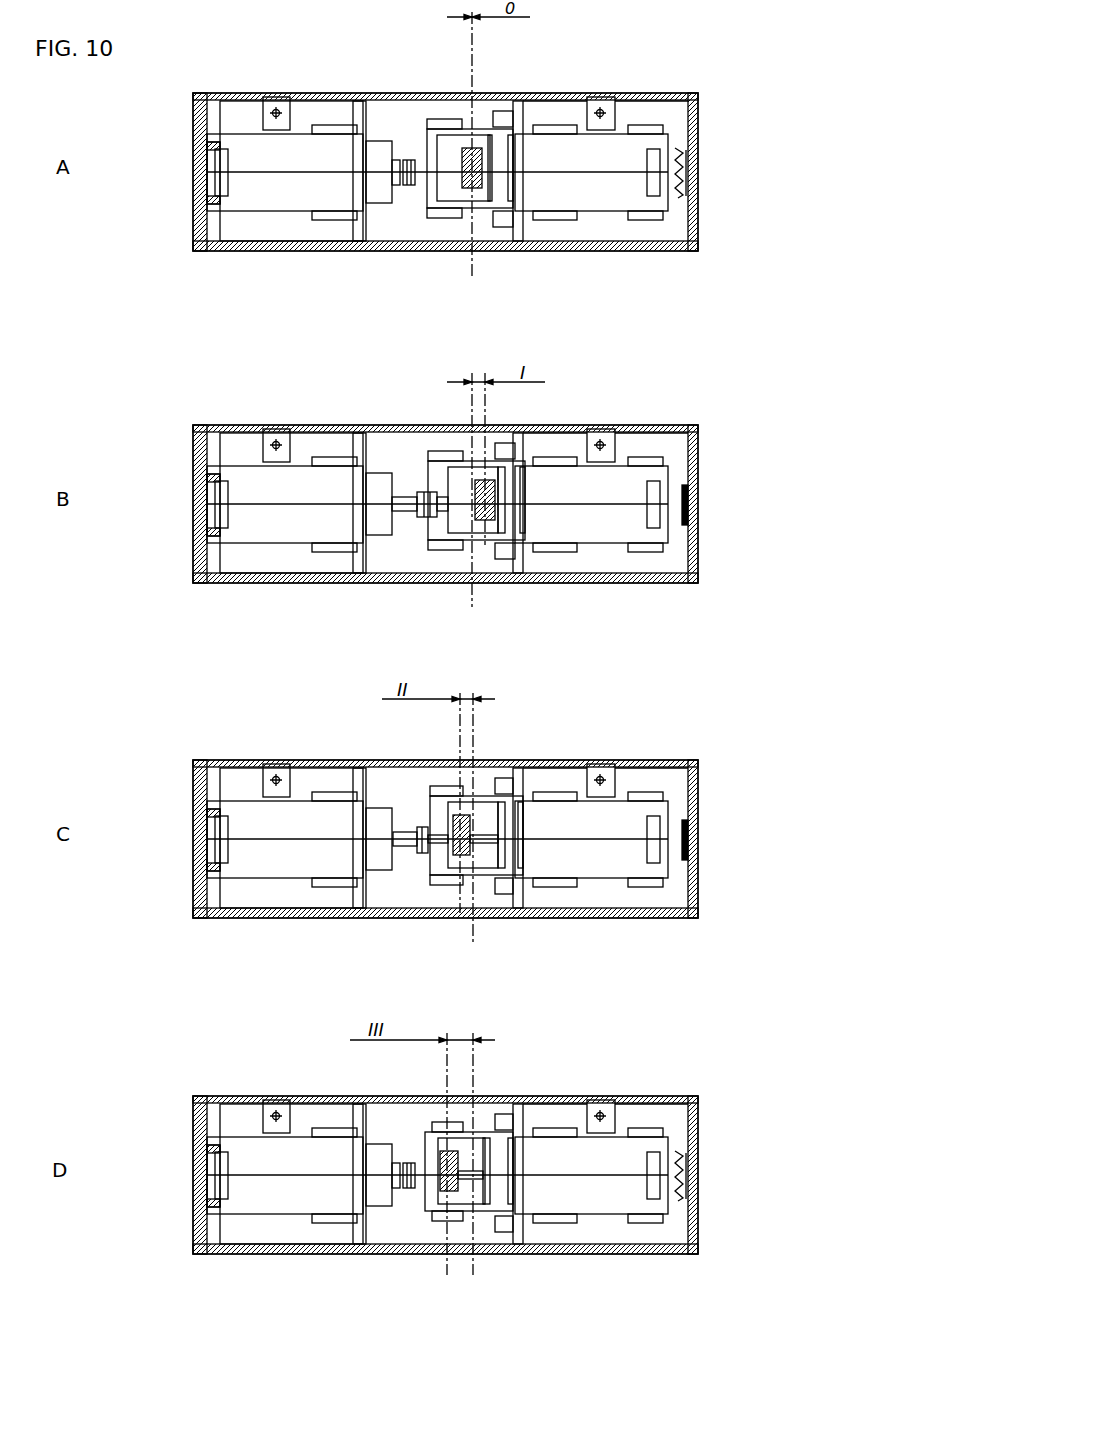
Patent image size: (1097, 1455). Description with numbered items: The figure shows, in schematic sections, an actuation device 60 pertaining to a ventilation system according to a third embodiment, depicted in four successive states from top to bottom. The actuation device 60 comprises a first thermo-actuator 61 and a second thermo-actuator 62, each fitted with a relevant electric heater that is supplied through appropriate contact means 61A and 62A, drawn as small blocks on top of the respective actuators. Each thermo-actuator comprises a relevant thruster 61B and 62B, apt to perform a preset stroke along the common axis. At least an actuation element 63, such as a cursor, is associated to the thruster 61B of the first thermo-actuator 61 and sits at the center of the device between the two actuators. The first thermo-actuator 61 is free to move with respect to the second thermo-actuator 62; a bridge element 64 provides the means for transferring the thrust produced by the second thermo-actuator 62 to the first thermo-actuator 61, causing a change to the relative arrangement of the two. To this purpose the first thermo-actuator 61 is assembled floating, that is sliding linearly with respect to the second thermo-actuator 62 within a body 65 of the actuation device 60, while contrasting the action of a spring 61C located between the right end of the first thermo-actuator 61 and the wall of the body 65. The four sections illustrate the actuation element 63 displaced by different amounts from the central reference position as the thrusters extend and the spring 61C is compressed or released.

The actuation device 60 is at (152, 207).
The first thermo-actuator 61 is at (600, 193).
The contact means 61A is at (612, 97).
The thruster 61B is at (492, 918).
The spring 61C is at (690, 195).
The second thermo-actuator 62 is at (272, 192).
The contact means 62A is at (289, 97).
The thruster 62B is at (400, 158).
The actuation element 63 is at (460, 190).
The bridge element 64 is at (428, 190).
The body 65 is at (699, 107).